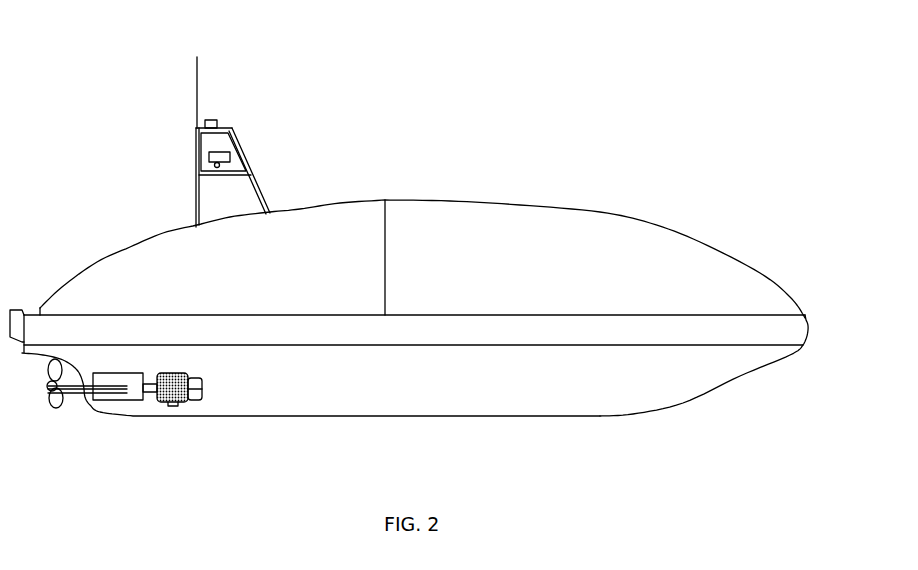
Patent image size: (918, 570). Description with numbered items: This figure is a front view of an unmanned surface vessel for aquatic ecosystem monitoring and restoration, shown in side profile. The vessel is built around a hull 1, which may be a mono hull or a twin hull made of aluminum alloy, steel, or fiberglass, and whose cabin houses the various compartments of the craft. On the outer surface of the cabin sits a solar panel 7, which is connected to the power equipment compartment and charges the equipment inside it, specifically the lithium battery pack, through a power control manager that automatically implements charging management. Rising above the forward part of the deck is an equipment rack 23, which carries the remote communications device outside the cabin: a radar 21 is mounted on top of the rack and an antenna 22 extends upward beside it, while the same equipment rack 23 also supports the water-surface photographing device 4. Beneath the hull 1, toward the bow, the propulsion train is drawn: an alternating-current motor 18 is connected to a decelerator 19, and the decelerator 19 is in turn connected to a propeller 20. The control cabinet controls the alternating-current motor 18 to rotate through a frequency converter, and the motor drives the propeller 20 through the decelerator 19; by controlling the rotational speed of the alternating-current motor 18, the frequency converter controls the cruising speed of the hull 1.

The hull 1 is at (317, 333).
The solar panel 7 is at (517, 257).
The water-surface photographing device 4 is at (221, 158).
The alternating-current motor 18 is at (192, 398).
The decelerator 19 is at (120, 398).
The propeller 20 is at (58, 408).
The radar 21 is at (214, 125).
The antenna 22 is at (197, 77).
The equipment rack 23 is at (258, 195).